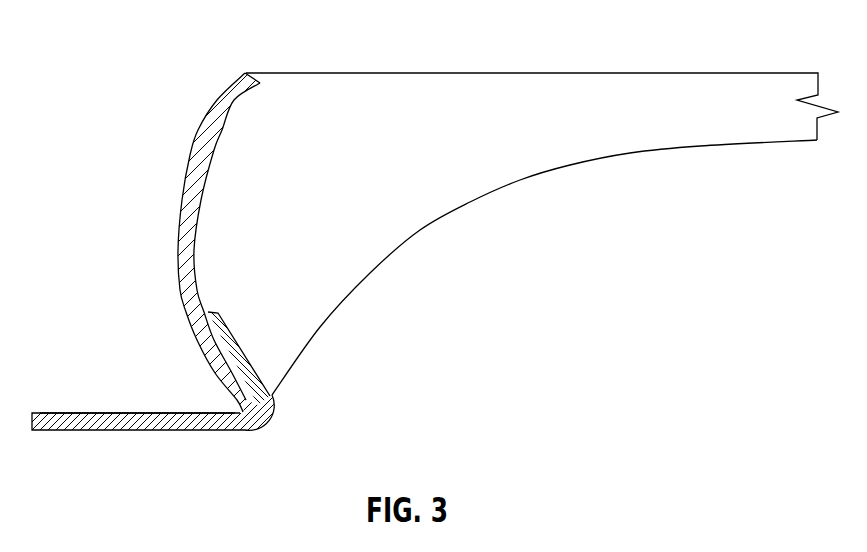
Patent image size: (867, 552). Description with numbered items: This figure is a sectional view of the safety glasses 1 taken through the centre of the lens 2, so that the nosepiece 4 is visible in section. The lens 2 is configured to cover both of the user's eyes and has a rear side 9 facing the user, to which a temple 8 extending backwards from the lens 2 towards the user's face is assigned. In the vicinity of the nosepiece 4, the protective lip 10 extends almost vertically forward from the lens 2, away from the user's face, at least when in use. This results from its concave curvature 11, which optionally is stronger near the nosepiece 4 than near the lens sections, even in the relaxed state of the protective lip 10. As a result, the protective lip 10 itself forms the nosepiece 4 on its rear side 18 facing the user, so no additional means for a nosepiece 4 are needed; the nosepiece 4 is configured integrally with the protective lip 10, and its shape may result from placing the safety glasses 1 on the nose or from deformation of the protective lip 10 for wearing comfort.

The safety glasses 1 is at (132, 86).
The lens 2 is at (217, 140).
The nosepiece 4 is at (84, 440).
The temple 8 is at (692, 87).
The rear side of the lens 9 is at (197, 233).
The protective lip 10 is at (156, 432).
The concave curvature 11 is at (139, 399).
The rear side of the protective lip 18 is at (232, 348).